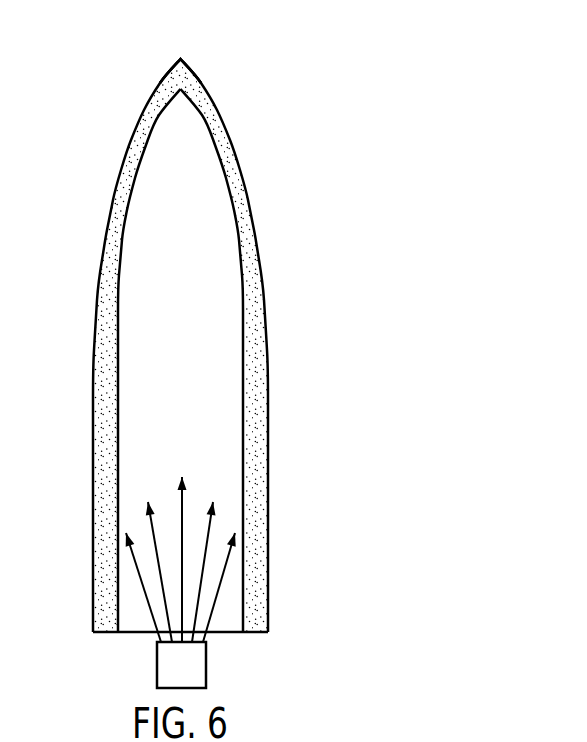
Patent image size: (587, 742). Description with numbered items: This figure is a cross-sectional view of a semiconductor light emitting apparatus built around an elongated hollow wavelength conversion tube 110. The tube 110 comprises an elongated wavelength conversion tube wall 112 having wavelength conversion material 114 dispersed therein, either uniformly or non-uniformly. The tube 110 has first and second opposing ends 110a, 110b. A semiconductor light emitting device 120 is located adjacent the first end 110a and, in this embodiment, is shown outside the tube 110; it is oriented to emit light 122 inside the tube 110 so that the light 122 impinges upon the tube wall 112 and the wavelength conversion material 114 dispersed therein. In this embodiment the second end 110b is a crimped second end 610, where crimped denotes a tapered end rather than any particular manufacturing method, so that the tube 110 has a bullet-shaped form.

The elongated hollow wavelength conversion tube 110 is at (186, 356).
The first end 110a is at (122, 633).
The second end 110b is at (158, 77).
The elongated wavelength conversion tube wall 112 is at (267, 338).
The wavelength conversion material 114 is at (107, 432).
The semiconductor light emitting device 120 is at (195, 665).
The light 122 is at (180, 505).
The crimped second end 610 is at (202, 82).